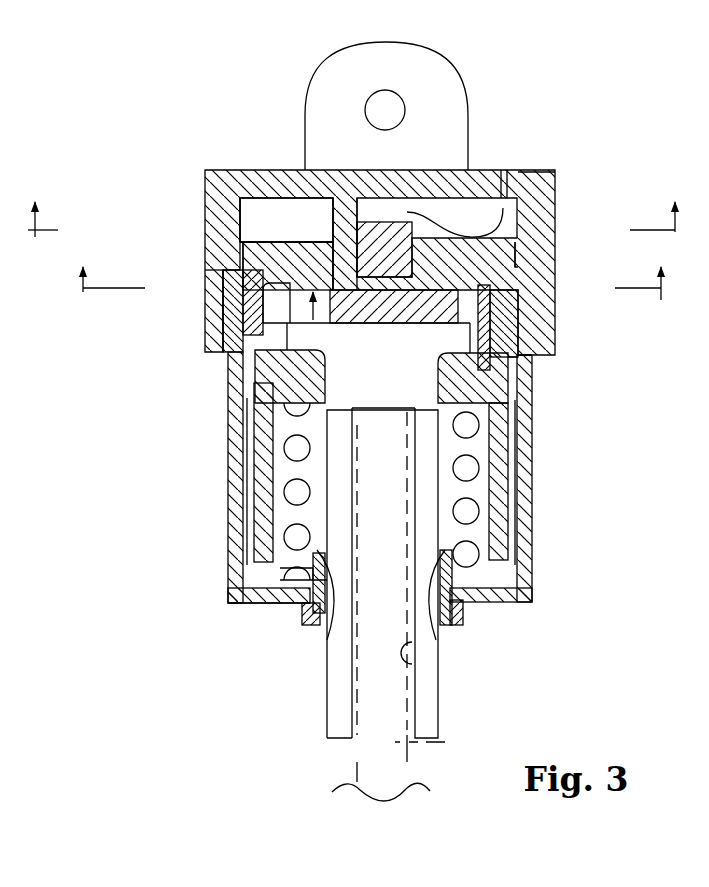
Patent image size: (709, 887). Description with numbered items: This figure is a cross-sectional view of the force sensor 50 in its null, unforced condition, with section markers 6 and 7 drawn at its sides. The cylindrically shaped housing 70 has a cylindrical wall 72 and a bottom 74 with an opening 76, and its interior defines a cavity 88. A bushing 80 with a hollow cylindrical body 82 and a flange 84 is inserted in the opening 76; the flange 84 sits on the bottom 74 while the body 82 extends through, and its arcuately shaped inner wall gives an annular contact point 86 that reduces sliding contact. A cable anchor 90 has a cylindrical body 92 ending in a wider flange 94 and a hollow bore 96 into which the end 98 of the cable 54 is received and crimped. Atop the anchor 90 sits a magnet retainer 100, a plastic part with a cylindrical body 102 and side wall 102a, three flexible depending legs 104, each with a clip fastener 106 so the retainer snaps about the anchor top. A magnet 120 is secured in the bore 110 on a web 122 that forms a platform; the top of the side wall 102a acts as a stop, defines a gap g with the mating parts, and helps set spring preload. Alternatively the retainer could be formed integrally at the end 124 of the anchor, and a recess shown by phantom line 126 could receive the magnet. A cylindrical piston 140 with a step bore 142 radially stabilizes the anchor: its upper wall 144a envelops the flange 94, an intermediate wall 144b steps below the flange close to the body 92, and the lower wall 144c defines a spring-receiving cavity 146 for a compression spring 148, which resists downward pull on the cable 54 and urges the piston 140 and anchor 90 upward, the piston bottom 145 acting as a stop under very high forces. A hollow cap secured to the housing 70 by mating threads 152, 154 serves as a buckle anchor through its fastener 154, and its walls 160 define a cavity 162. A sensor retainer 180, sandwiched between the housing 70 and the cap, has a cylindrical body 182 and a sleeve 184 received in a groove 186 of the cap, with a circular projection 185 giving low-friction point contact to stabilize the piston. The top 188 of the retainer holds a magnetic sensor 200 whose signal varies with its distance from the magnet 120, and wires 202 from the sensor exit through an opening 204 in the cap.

The section line 6- 6 is at (354, 201).
The section line 7- 7 is at (374, 275).
The force sensor 50 is at (357, 521).
The cable 54 is at (403, 764).
The housing 70 is at (357, 507).
The cylindrical wall 72 is at (258, 525).
The bottom 74 is at (265, 604).
The opening 76 is at (310, 620).
The bushing 80 is at (456, 614).
The cylindrical body 82 is at (462, 596).
The flange 84 is at (452, 577).
The annular contact point 86 is at (327, 598).
The cavity 88 is at (298, 578).
The cable anchor 90 is at (433, 578).
The cylindrical body 92 is at (445, 540).
The flange 94 is at (522, 286).
The hollow bore 96 is at (397, 665).
The cable end 98 is at (403, 405).
The magnet retainer 100 is at (414, 225).
The cylindrical body 102 is at (522, 232).
The side wall 102a is at (286, 220).
The flexible depending legs 104 is at (522, 272).
The clip fastener 106 is at (498, 378).
The bore 110 is at (410, 205).
The magnet 120 is at (325, 367).
The web 122 is at (404, 338).
The end of the anchor 124 is at (290, 372).
The phantom line 126 is at (404, 338).
The piston 140 is at (512, 462).
The step bore 142 is at (233, 440).
The upper cylindrical wall 144a is at (240, 340).
The intermediate wall 144b is at (235, 355).
The lower wall 144c is at (245, 550).
The bottom of the piston 145 is at (258, 600).
The spring-receiving cavity 146 is at (500, 493).
The compression spring 148 is at (468, 425).
The threads 152 is at (220, 307).
The fastener or anchor 154 is at (330, 110).
The walls of the cap 160 is at (207, 272).
The cavity 162 is at (245, 215).
The sensor retainer 180 is at (258, 226).
The cylindrical body 182 is at (222, 245).
The sleeve 184 is at (490, 330).
The circular projection 185 is at (524, 358).
The groove 186 is at (225, 232).
The top of the sensor retainer 188 is at (385, 195).
The magnetic sensor 200 is at (366, 205).
The wires 202 is at (506, 176).
The opening 204 is at (532, 172).
The gap g is at (324, 279).